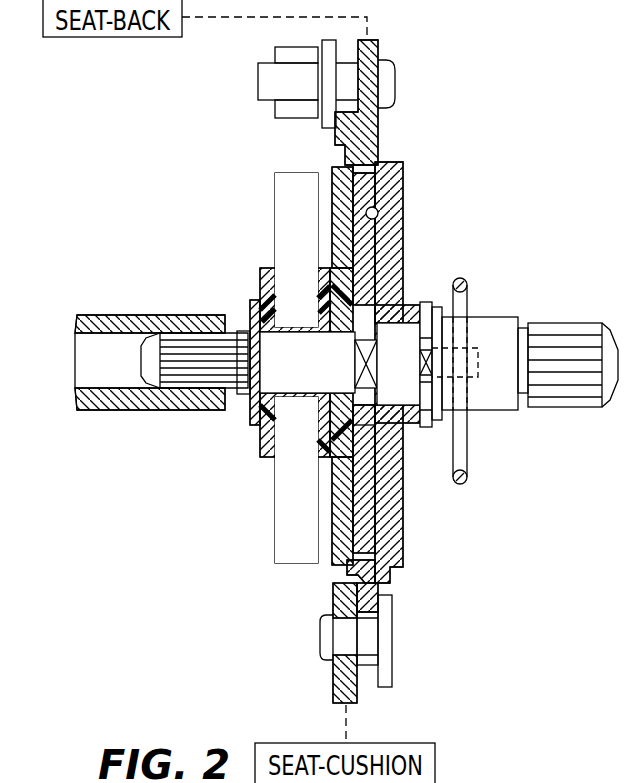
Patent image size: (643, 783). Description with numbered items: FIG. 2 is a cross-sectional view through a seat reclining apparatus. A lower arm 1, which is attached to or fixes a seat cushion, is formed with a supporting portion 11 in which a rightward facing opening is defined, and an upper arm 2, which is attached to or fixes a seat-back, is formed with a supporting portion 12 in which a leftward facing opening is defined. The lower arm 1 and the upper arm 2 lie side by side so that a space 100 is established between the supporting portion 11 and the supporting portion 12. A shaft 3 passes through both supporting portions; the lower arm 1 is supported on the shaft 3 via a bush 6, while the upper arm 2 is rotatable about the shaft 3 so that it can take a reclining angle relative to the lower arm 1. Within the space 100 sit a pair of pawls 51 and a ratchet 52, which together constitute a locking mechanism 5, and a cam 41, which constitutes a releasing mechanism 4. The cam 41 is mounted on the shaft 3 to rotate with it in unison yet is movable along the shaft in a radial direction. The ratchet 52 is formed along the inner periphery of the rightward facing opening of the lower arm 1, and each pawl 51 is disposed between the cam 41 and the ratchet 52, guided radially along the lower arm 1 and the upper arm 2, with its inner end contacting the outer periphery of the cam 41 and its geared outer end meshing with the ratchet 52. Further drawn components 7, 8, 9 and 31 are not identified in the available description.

The lower arm 1 is at (333, 690).
The upper arm 2 is at (380, 43).
The shaft 3 is at (405, 332).
The releasing mechanism 4 is at (347, 480).
The locking mechanism 5 is at (343, 561).
The bush 6 is at (270, 441).
The shaft 7 is at (355, 355).
The bearing 8 is at (362, 328).
The gear 9 is at (282, 205).
The supporting portion 11 is at (340, 432).
The supporting portion 12 is at (402, 243).
The tube 31 is at (100, 318).
The cam 41 is at (373, 433).
The pawl 51 is at (373, 196).
The ratchet 52 is at (368, 572).
The space 100 is at (378, 214).